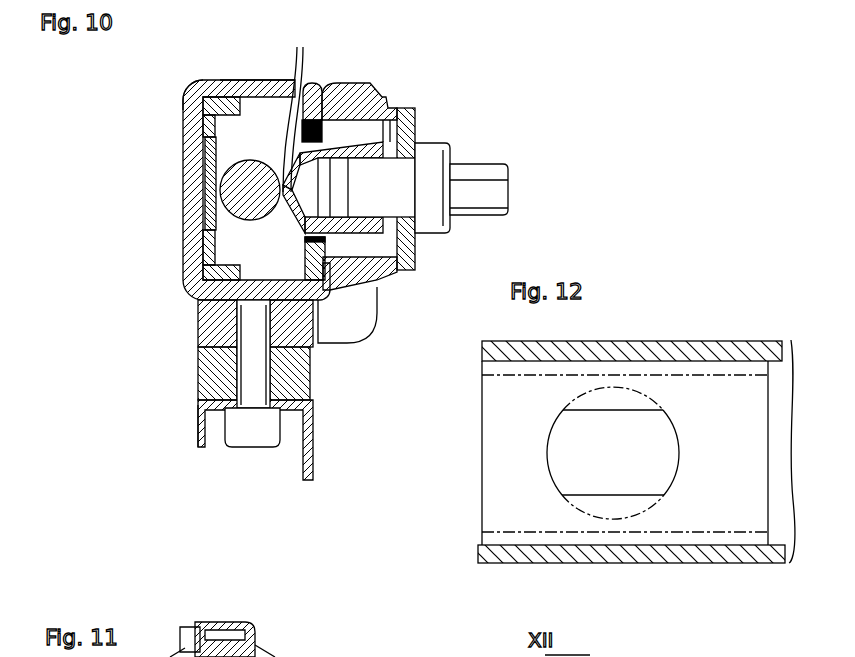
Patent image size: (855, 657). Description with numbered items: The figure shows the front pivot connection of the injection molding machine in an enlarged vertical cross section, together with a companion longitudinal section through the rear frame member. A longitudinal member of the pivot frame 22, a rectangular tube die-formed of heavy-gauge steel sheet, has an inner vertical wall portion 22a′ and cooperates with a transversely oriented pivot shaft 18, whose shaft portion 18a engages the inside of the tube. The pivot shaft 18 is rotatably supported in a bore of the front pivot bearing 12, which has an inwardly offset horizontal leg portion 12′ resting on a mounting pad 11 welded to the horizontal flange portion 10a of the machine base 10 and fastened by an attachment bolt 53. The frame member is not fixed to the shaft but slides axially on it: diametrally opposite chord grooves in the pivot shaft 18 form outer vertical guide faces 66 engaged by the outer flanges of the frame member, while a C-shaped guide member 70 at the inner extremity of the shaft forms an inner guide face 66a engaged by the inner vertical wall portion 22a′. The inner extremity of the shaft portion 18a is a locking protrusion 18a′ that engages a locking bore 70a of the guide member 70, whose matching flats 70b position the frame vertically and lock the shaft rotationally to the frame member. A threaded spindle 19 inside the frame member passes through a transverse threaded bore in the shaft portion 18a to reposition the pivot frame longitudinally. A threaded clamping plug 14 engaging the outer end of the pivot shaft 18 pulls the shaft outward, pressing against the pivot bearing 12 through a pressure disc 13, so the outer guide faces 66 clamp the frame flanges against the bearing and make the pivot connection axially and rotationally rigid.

In FIG. 10, the pivot frame 22 is at (178, 207).
In FIG. 12, the pivot frame 22 is at (608, 569).
In FIG. 10, the inner vertical wall portion 22a′ is at (195, 107).
In FIG. 10, the guide member 70 is at (212, 95).
In FIG. 12, the guide member 70 is at (762, 400).
In FIG. 10, the flats 70b is at (197, 122).
In FIG. 12, the flats 70b is at (563, 410).
In FIG. 12, the locking bore 70a is at (547, 453).
In FIG. 10, the inner guide faces 66a is at (205, 138).
In FIG. 12, the inner guide faces 66a is at (622, 400).
In FIG. 10, the outer vertical guide faces 66 is at (299, 108).
In FIG. 10, the threaded spindle 19 is at (222, 190).
In FIG. 10, the locking protrusion 18a′ is at (207, 163).
In FIG. 10, the shaft portion 18a is at (205, 233).
In FIG. 10, the pivot shaft 18 is at (365, 243).
In FIG. 10, the front pivot bearing 12 is at (350, 100).
In FIG. 10, the horizontal leg portion 12′ is at (215, 330).
In FIG. 10, the pressure disc 13 is at (407, 108).
In FIG. 10, the clamping plug 14 is at (480, 183).
In FIG. 10, the mounting pad 11 is at (295, 378).
In FIG. 10, the machine base 10 is at (310, 440).
In FIG. 10, the horizontal flange portion 10a is at (205, 380).
In FIG. 10, the attachment bolt 53 is at (250, 432).